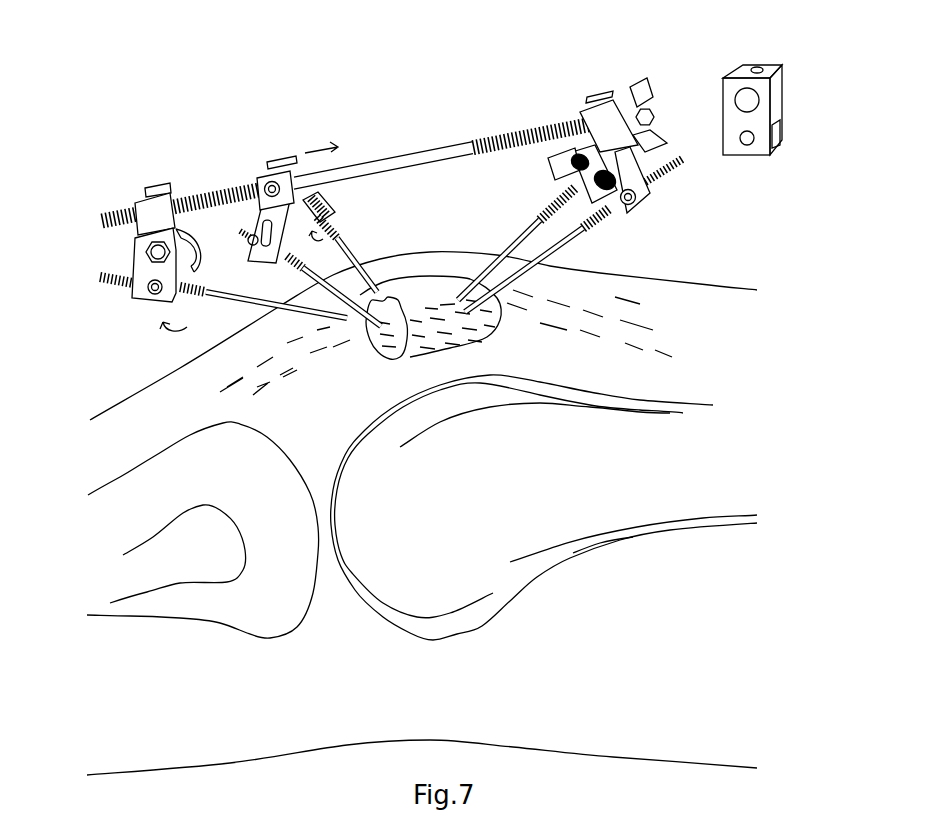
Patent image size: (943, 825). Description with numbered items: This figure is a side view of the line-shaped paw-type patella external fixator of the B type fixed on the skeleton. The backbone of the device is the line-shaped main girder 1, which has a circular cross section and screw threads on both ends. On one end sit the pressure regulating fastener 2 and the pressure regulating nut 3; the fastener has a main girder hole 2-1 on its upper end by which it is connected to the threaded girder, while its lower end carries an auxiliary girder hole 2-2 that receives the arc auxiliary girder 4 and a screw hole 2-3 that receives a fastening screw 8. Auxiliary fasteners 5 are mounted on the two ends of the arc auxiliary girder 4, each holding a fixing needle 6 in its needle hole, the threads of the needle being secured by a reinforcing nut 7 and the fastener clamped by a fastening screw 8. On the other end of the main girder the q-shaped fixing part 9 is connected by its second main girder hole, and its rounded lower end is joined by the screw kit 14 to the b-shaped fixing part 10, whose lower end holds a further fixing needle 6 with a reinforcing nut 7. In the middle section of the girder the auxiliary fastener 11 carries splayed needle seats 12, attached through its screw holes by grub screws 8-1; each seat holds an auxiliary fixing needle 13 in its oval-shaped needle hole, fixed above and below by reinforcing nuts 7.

The line-shaped main girder 1 is at (395, 168).
The pressure regulating fastener 2 is at (733, 90).
The main girder hole 2-1 is at (748, 100).
The auxiliary girder hole 2-2 is at (775, 133).
The screw hole 2-3 is at (755, 72).
The pressure regulating nut 3 is at (677, 170).
The arc auxiliary girder 4 is at (550, 172).
The auxiliary fastener 5 is at (643, 203).
The fixing needle 6 is at (117, 287).
The reinforcing nut 7 is at (570, 192).
The fastening screw 8 is at (563, 157).
The grub screw 8-1 is at (263, 170).
The q-shaped fixing part 9 is at (150, 213).
The b-shaped fixing part 10 is at (157, 275).
The auxiliary fastener 11 is at (298, 172).
The splayed needle seat 12 is at (263, 187).
The auxiliary fixing needle 13 is at (300, 273).
The screw kit 14 is at (117, 213).